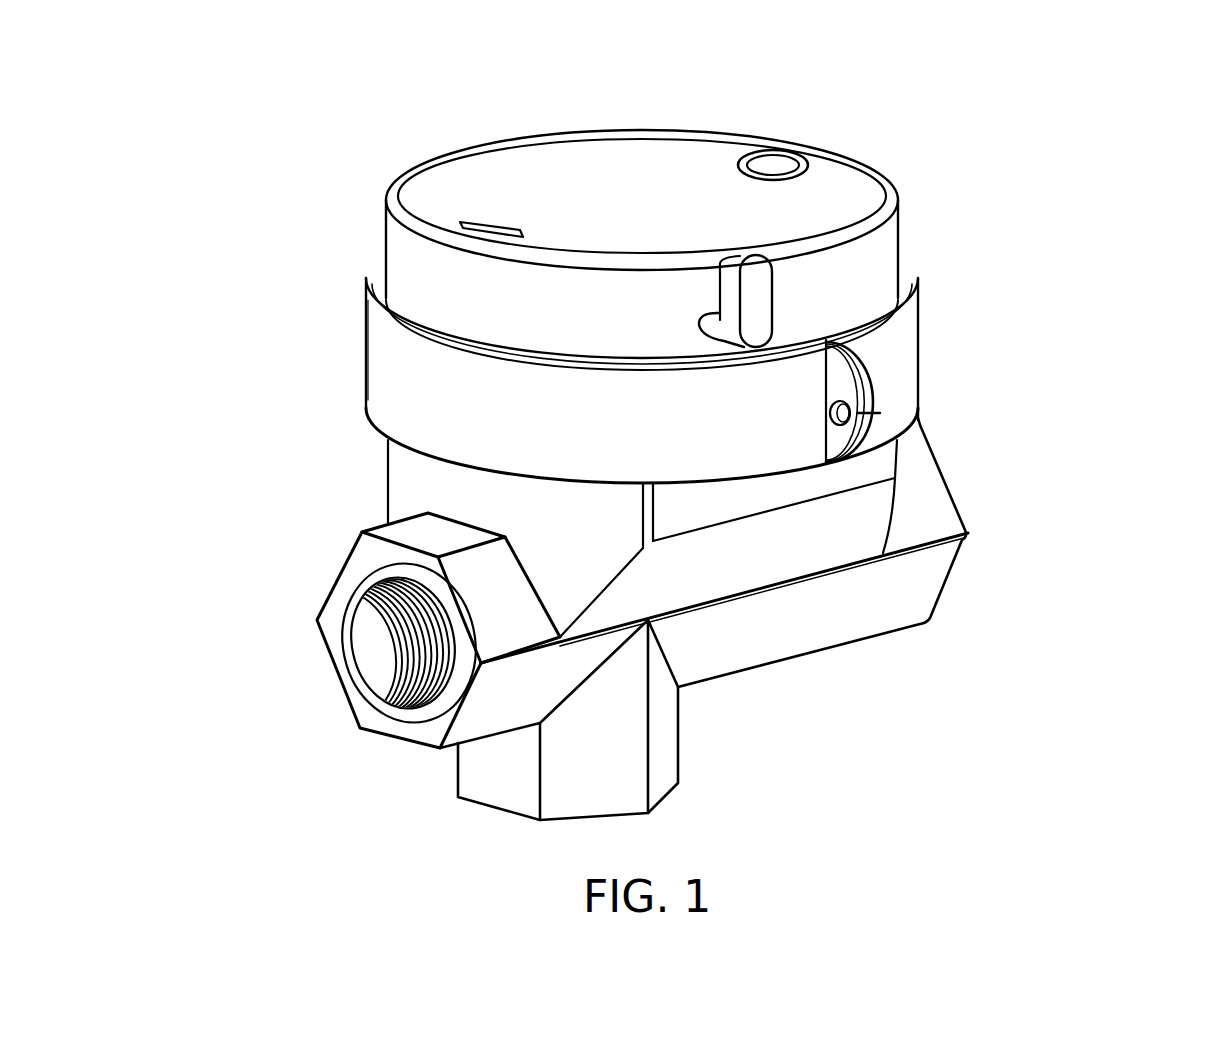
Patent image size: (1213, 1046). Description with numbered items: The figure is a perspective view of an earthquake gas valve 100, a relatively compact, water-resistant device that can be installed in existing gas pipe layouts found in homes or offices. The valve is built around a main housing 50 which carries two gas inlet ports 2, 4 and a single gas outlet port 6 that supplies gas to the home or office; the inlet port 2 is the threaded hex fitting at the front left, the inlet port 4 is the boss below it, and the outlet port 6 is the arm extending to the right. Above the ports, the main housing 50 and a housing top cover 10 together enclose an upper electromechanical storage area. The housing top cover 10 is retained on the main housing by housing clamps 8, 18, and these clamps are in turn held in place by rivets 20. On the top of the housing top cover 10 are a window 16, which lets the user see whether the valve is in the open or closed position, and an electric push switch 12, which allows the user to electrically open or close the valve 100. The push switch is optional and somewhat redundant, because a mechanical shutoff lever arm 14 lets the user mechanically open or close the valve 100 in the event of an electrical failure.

The earthquake gas valve 100 is at (348, 110).
The main housing 50 is at (1033, 420).
The gas inlet port 2 is at (385, 655).
The gas inlet port 4 is at (502, 785).
The gas outlet port 6 is at (938, 578).
The housing clamp 8 is at (908, 363).
The housing top cover 10 is at (880, 268).
The electric push switch 12 is at (787, 163).
The mechanical shutoff lever arm 14 is at (760, 300).
The window 16 is at (485, 224).
The housing clamp 18 is at (393, 381).
The rivet 20 is at (880, 417).